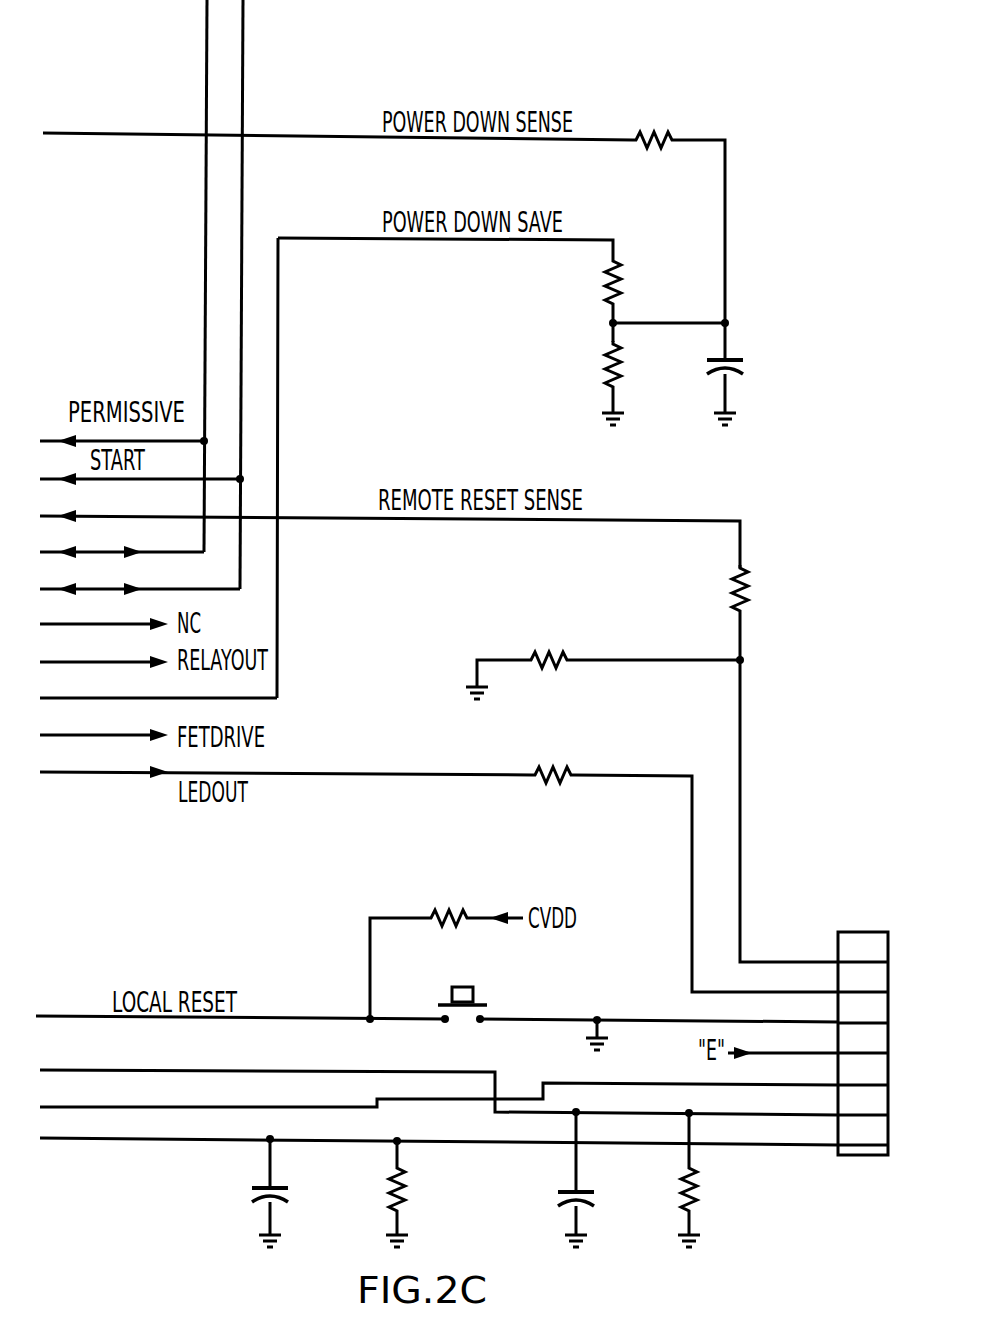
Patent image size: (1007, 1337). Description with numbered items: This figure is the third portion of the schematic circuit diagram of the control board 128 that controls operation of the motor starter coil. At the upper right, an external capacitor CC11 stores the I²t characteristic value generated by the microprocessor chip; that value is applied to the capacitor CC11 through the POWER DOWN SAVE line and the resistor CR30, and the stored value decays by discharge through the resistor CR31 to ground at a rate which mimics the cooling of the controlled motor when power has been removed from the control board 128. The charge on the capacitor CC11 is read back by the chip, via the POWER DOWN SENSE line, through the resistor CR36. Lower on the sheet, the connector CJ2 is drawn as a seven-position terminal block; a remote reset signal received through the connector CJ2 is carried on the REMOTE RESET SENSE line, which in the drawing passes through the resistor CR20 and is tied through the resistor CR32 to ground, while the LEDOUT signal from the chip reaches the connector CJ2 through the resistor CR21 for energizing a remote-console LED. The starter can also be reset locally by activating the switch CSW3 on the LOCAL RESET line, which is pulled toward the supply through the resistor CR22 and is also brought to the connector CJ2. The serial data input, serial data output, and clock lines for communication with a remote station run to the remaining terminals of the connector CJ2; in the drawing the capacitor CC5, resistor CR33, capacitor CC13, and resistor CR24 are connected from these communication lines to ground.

The resistor CR36 is at (655, 132).
The resistor CR30 is at (626, 284).
The resistor CR31 is at (600, 356).
The external capacitor CC11 is at (738, 372).
The remote reset sense resistor CR20 is at (750, 595).
The resistor to ground CR32 is at (555, 652).
The LED out resistor CR21 is at (558, 770).
The pull-up resistor CR22 is at (437, 905).
The switch CSW3 is at (478, 995).
The control board 128 is at (614, 866).
The capacitor CC5 is at (282, 1198).
The resistor CR33 is at (405, 1190).
The capacitor CC13 is at (597, 1193).
The resistor CR24 is at (702, 1190).
The connector CJ2 is at (837, 1026).